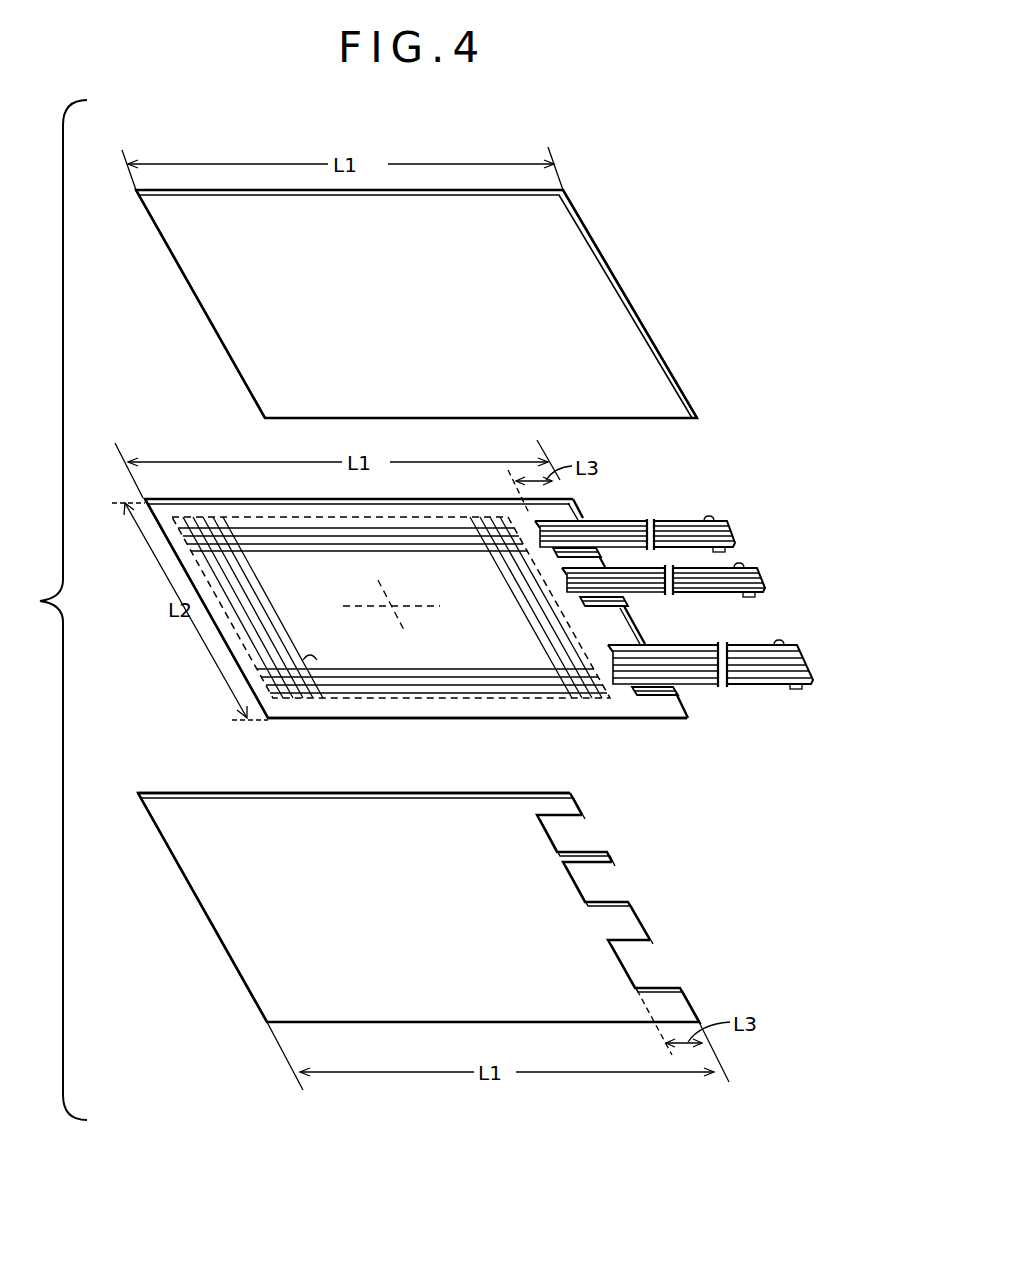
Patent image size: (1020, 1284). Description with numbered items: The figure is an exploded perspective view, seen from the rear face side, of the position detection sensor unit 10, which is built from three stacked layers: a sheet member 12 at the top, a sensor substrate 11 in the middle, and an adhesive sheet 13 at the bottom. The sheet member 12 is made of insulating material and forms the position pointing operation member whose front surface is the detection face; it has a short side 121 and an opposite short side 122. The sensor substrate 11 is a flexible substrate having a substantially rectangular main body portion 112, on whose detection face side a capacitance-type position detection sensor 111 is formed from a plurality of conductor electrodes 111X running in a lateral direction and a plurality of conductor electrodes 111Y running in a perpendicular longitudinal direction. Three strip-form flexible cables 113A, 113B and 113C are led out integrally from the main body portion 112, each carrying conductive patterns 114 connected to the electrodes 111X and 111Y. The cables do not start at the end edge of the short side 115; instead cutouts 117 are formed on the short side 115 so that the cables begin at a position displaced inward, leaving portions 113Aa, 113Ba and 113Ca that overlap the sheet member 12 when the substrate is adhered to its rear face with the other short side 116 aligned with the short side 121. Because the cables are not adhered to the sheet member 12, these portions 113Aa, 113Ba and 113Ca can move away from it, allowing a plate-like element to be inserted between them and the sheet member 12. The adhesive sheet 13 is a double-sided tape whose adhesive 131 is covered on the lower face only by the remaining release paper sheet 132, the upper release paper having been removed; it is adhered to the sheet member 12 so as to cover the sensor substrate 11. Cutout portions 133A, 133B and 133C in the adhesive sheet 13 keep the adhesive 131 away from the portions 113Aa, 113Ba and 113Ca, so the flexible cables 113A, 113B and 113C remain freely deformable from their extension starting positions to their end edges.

The position detection sensor unit 10 is at (148, 131).
The sensor substrate 11 is at (401, 599).
The position detection sensor 111 is at (501, 700).
The conductor electrodes 111X is at (307, 656).
The conductor electrodes 111Y is at (406, 667).
The main body portion 112 is at (581, 706).
The flexible cable 113A is at (716, 664).
The portion of flexible cable 113Aa is at (674, 691).
The flexible cable 113B is at (679, 576).
The portion of flexible cable 113Ba is at (624, 606).
The flexible cable 113C is at (649, 503).
The portion of flexible cable 113Ca is at (578, 522).
The conductive patterns 114 is at (668, 532).
The short side 115 is at (688, 717).
The short side 116 is at (238, 663).
The cutouts 117 is at (576, 522).
The sheet member 12 is at (198, 255).
The short side 121 is at (222, 344).
The short side 122 is at (577, 207).
The adhesive sheet 13 is at (190, 876).
The adhesive 131 is at (158, 793).
The release paper sheet 132 is at (240, 960).
The cutout portion 133A is at (645, 966).
The cutout portion 133B is at (592, 879).
The cutout portion 133C is at (565, 832).